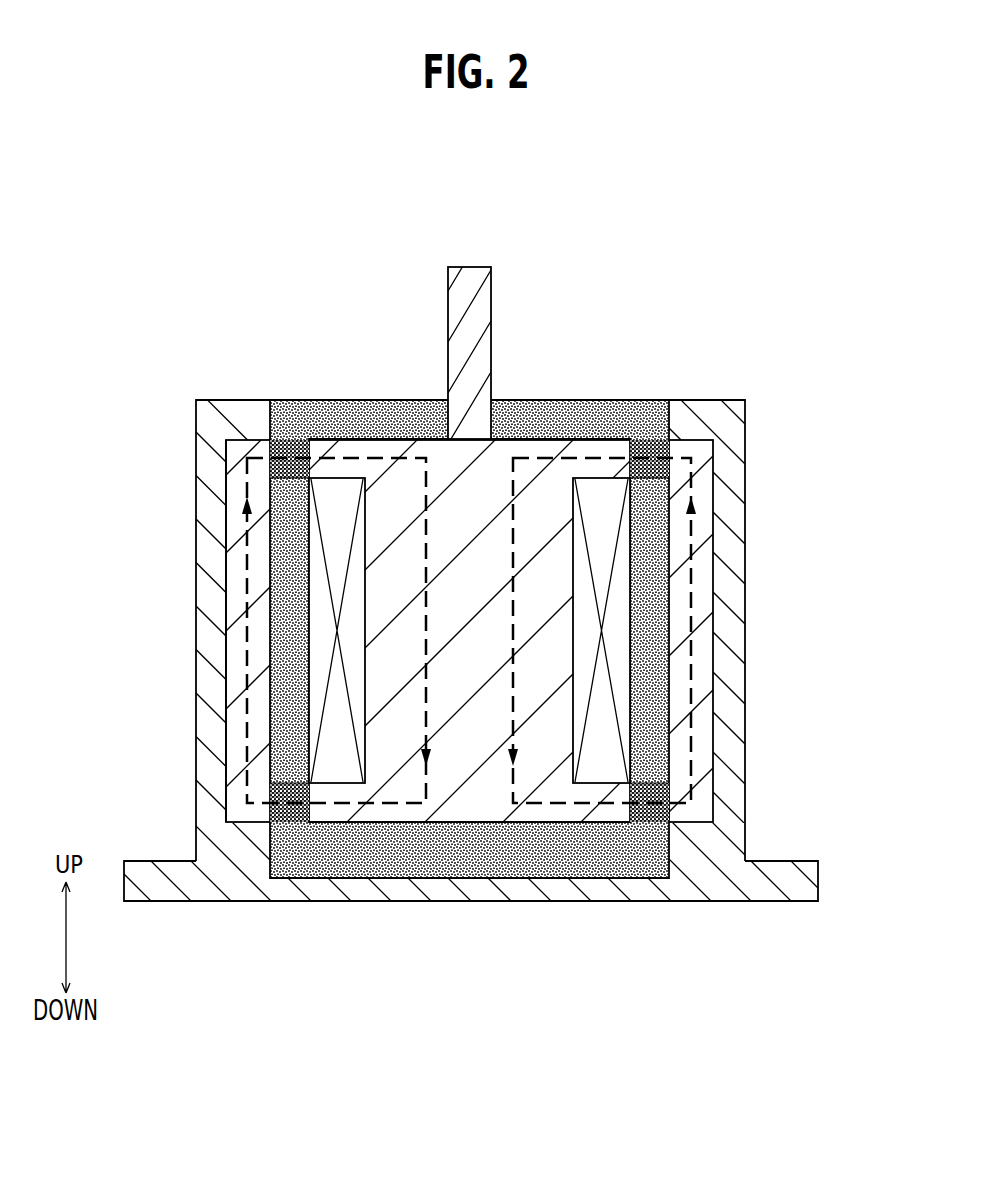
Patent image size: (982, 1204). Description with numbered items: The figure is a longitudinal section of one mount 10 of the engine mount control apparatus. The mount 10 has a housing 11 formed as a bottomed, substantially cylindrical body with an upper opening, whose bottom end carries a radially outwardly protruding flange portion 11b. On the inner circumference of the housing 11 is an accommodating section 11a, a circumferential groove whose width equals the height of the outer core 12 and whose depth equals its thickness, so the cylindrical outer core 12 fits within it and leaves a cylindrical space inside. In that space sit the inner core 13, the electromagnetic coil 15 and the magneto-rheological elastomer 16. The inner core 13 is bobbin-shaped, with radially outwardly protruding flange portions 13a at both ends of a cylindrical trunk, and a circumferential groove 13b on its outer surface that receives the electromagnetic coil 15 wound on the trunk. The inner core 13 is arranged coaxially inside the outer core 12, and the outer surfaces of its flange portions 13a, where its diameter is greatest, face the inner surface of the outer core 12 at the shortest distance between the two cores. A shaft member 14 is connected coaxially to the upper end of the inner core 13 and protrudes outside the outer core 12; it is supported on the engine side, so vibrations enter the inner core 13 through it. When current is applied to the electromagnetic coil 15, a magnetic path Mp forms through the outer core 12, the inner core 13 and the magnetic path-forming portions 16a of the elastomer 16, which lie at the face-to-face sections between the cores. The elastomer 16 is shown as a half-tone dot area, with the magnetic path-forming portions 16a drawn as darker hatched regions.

The mount 10 is at (643, 262).
The housing 11 is at (491, 650).
The accommodating section 11a is at (226, 513).
The flange portion 11b is at (796, 860).
The outer core 12 is at (235, 568).
The inner core 13 is at (491, 652).
The flange portion 13a is at (360, 447).
The circumferential groove 13b is at (572, 607).
The shaft member 14 is at (492, 297).
The electromagnetic coil 15 is at (325, 637).
The magneto-rheological elastomer 16 is at (545, 652).
The magnetic path-forming portion 16a is at (289, 447).
The magnetic path Mp is at (692, 651).